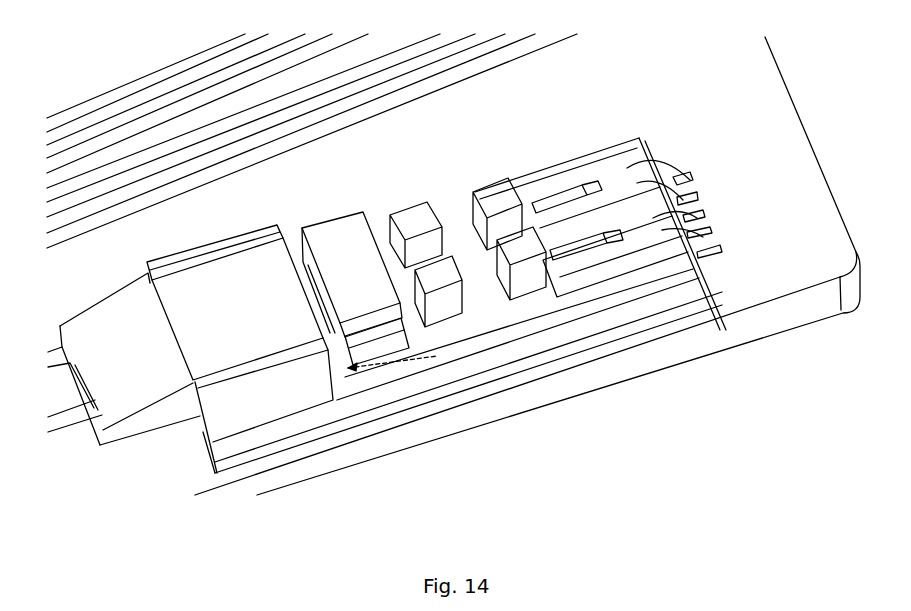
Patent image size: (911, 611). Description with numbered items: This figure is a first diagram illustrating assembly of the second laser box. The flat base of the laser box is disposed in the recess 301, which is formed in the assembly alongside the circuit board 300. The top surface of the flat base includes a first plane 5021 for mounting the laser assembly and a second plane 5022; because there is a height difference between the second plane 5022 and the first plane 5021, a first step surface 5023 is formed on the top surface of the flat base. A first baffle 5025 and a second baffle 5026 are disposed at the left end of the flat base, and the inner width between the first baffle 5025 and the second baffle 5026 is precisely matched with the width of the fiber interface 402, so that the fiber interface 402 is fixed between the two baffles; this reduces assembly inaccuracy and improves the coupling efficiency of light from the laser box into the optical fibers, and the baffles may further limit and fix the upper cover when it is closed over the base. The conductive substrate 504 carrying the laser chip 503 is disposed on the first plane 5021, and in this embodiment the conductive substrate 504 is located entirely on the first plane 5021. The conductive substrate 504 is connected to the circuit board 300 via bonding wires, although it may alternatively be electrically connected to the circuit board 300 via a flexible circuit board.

The circuit board 300 is at (755, 105).
The recess 301 is at (195, 472).
The fiber interface 402 is at (117, 383).
The laser chip 503 is at (580, 242).
The conductive substrate 504 is at (647, 243).
The first plane 5021 is at (495, 300).
The second plane 5022 is at (367, 393).
The first step surface 5023 is at (437, 355).
The first baffle 5025 is at (255, 395).
The second baffle 5026 is at (228, 242).